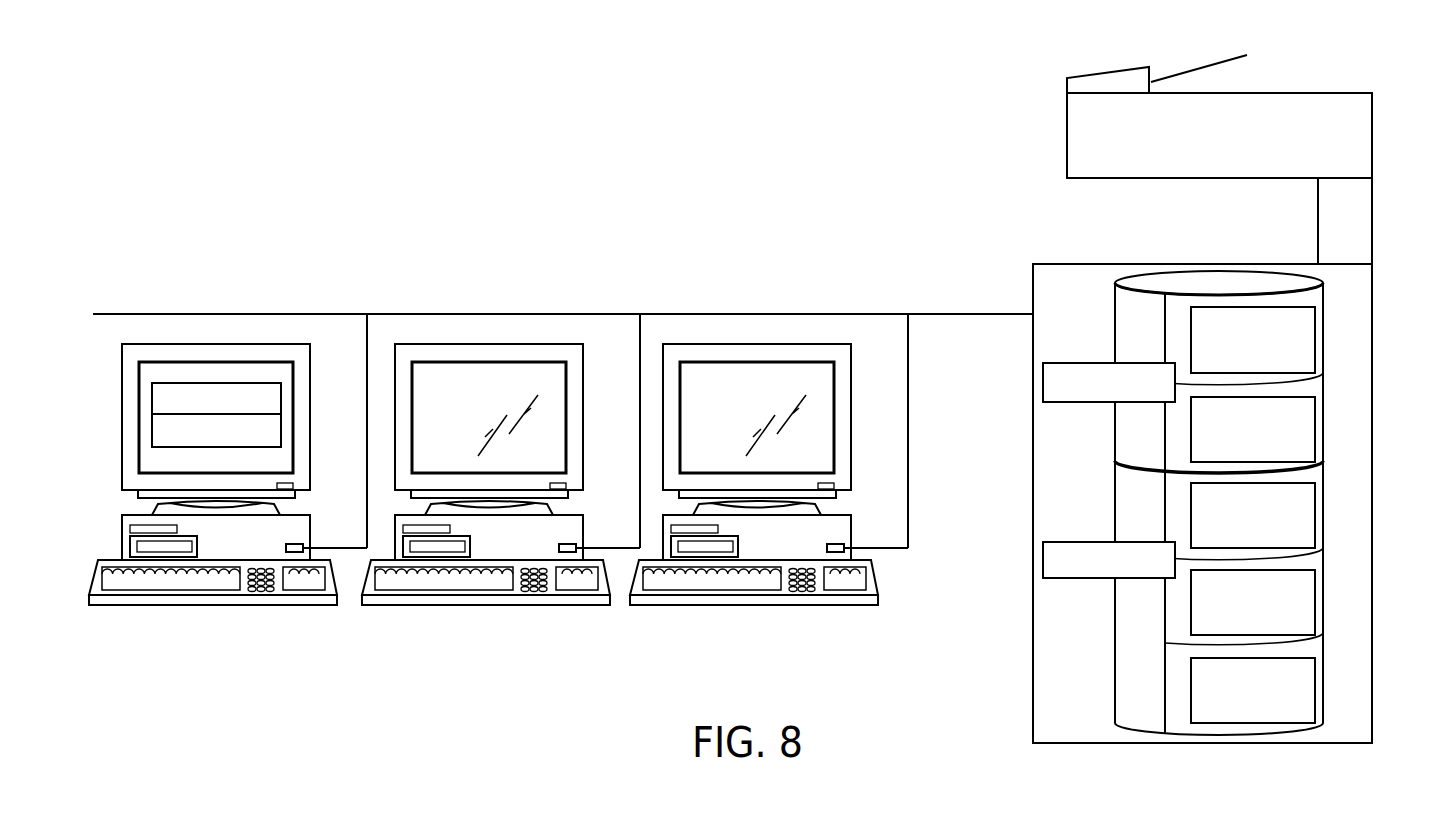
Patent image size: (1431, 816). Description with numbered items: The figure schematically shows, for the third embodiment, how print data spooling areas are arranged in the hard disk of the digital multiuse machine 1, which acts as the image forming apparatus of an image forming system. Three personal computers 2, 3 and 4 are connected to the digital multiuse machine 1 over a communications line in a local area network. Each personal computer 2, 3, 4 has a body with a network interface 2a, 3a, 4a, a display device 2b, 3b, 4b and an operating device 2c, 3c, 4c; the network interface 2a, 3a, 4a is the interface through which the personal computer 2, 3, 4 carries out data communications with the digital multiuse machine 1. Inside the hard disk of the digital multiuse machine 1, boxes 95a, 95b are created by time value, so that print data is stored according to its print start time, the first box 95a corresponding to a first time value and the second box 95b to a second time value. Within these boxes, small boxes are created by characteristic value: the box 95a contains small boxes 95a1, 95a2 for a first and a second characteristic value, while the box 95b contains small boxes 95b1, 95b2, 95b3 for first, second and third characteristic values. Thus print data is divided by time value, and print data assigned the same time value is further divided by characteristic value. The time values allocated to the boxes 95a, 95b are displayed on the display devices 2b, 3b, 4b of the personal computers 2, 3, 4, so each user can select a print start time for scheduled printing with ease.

The digital multiuse machine 1 is at (1372, 143).
The personal computer 2 is at (321, 376).
The network interface 2a is at (286, 548).
The display device 2b is at (289, 423).
The operating device 2c is at (190, 605).
The personal computer 3 is at (501, 483).
The network interface 3a is at (575, 537).
The display device 3b is at (522, 417).
The operating device 3c is at (486, 606).
The personal computer 4 is at (769, 483).
The network interface 4a is at (843, 537).
The display device 4b is at (790, 417).
The operating device 4c is at (754, 606).
The box 95a is at (1128, 306).
The small box 95a1 is at (1315, 320).
The small box 95a2 is at (1315, 409).
The box 95b is at (1128, 484).
The small box 95b1 is at (1315, 496).
The small box 95b2 is at (1315, 583).
The small box 95b3 is at (1315, 670).